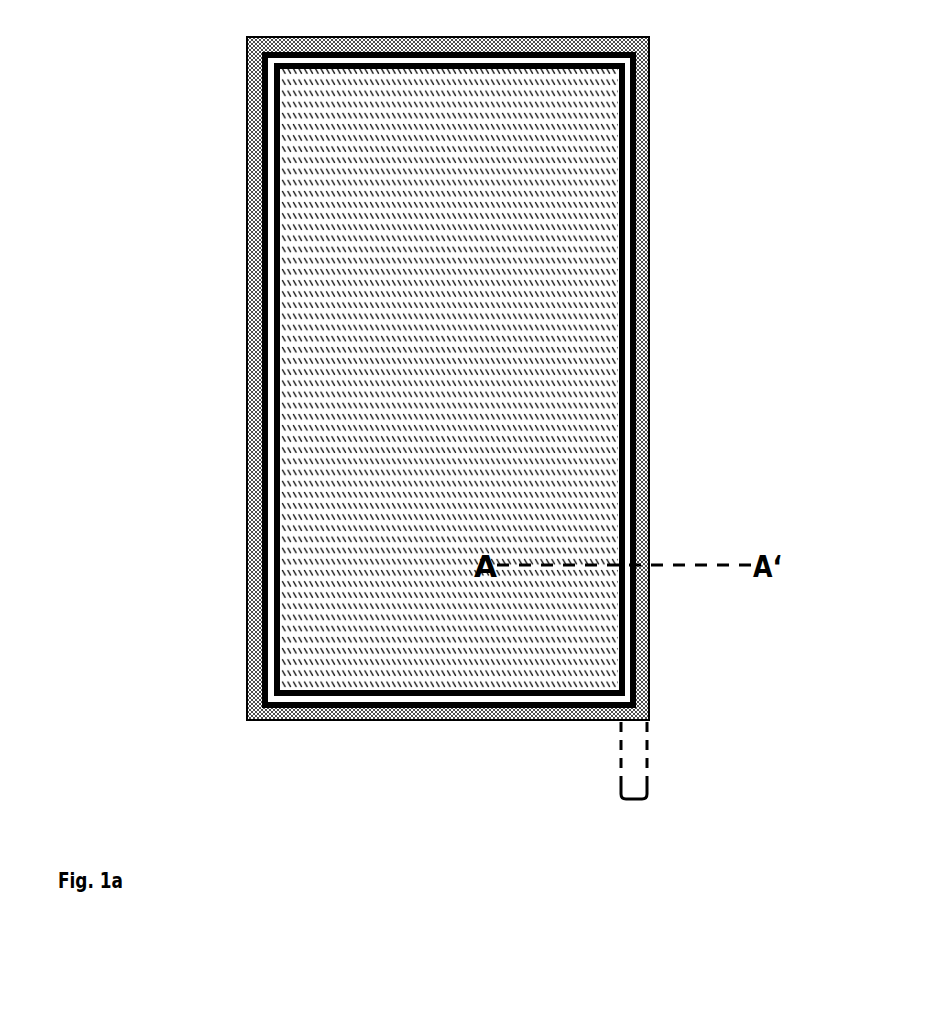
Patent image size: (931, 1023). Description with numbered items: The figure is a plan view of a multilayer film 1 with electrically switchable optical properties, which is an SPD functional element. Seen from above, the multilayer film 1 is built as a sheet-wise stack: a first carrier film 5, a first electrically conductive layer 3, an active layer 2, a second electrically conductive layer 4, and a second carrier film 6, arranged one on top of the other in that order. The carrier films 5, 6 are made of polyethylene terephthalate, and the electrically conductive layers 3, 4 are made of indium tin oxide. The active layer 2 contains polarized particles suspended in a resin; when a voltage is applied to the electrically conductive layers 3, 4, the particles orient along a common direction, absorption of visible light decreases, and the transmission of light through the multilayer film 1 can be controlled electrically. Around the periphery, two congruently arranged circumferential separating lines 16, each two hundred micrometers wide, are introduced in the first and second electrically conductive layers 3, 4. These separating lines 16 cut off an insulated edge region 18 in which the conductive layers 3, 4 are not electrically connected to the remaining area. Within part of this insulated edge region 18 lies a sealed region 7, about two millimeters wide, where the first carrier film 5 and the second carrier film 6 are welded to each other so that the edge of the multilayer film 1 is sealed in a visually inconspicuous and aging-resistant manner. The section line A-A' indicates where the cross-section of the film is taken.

The multilayer film 1 is at (455, 378).
The active layer 2 is at (550, 378).
The first electrically conductive layer 3 is at (550, 378).
The second electrically conductive layer 4 is at (583, 186).
The first carrier film 5 is at (543, 378).
The second carrier film 6 is at (649, 472).
The sealed region 7 is at (640, 395).
The separating lines 16 is at (627, 302).
The insulated edge region 18 is at (634, 799).